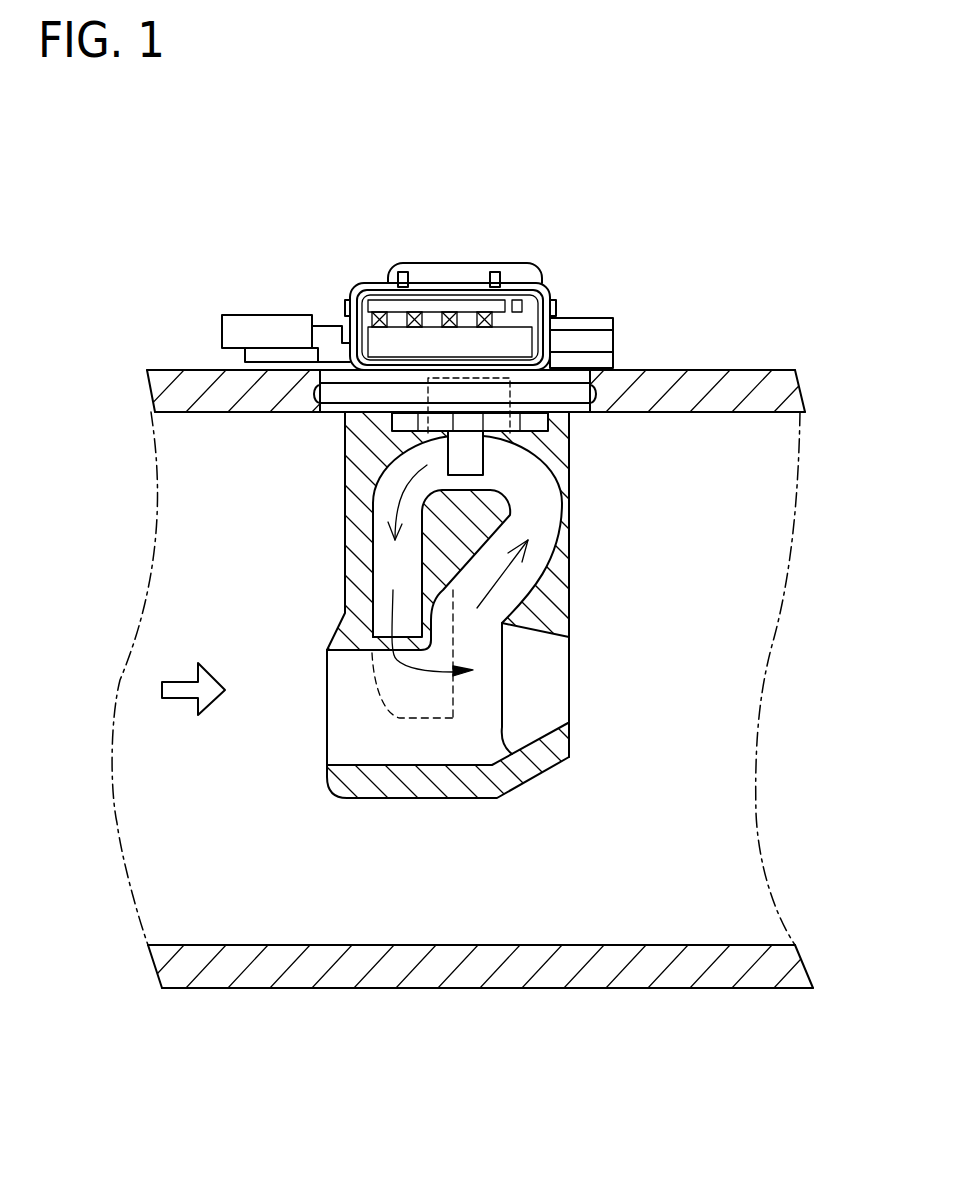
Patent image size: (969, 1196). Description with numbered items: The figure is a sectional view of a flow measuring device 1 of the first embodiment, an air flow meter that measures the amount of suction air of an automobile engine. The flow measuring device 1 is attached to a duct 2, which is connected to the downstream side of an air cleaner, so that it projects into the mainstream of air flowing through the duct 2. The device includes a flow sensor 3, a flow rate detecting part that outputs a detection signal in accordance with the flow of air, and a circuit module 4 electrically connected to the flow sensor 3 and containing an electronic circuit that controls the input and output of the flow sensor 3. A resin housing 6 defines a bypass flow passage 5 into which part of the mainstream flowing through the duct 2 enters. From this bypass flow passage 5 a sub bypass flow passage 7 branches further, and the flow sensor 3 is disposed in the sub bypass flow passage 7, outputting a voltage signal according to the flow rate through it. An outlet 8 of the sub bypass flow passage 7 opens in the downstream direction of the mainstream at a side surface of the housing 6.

The flow measuring device 1 is at (322, 290).
The duct 2 is at (772, 385).
The flow sensor 3 is at (478, 457).
The circuit module 4 is at (493, 382).
The bypass flow passage 5 is at (393, 742).
The resin housing 6 is at (345, 533).
The sub bypass flow passage 7 is at (548, 503).
The outlet 8 is at (453, 690).